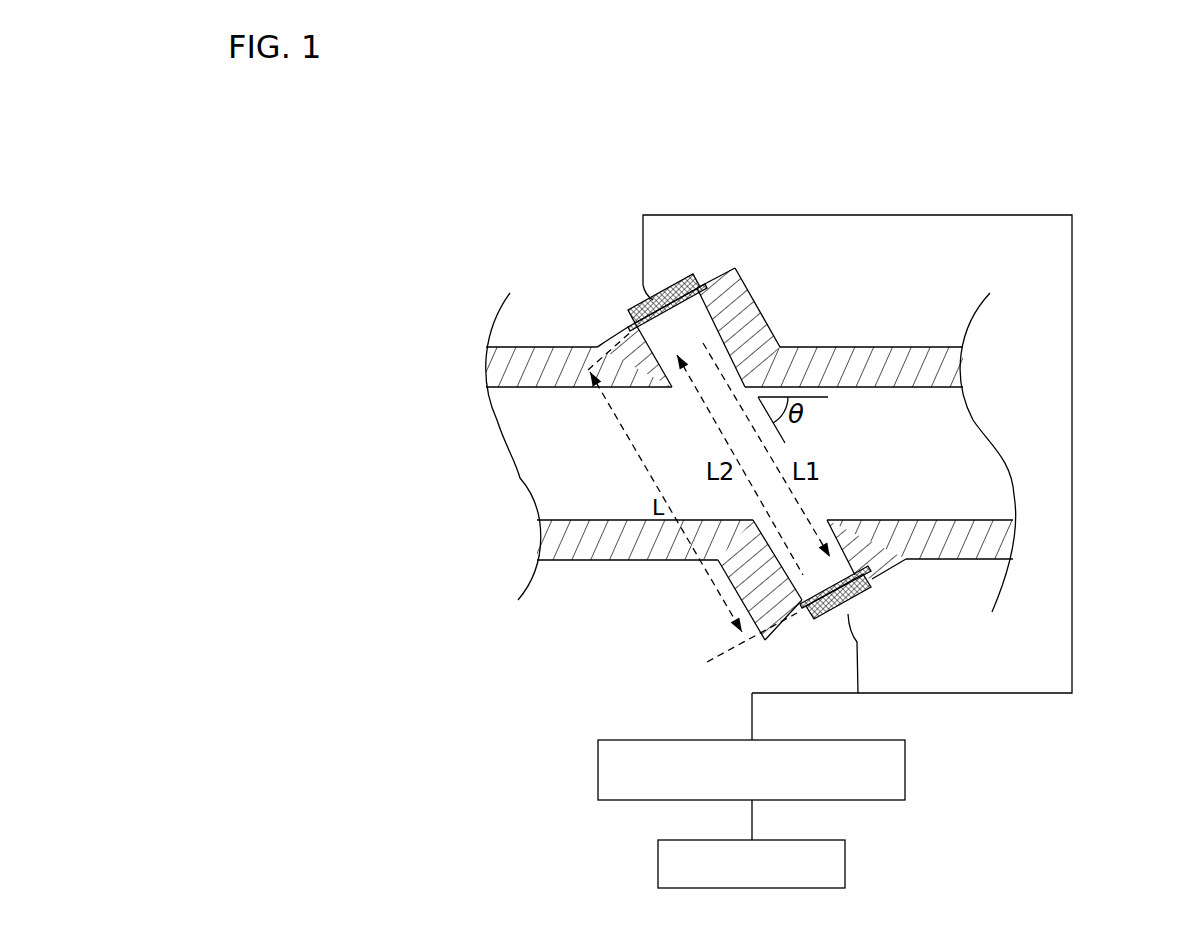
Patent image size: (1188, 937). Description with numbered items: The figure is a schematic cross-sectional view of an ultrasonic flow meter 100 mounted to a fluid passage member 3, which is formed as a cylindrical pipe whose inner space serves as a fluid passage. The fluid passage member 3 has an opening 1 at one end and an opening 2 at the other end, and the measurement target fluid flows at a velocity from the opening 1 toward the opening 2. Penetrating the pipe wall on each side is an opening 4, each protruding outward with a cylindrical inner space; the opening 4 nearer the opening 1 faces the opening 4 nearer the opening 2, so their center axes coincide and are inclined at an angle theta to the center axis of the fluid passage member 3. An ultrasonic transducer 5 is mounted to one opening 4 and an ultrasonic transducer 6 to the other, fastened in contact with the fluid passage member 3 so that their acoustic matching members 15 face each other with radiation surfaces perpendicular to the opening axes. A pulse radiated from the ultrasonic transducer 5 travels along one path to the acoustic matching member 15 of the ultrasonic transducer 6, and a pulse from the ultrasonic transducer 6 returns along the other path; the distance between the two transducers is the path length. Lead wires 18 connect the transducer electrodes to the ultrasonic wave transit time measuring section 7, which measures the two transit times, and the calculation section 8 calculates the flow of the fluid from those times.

The ultrasonic flow meter 100 is at (676, 187).
The opening 1 is at (540, 462).
The opening 2 is at (958, 460).
The fluid passage member 3 is at (863, 367).
The opening 4 is at (733, 380).
The ultrasonic transducer 5 is at (648, 300).
The ultrasonic transducer 6 is at (857, 610).
The ultrasonic wave transit time measuring section 7 is at (905, 773).
The calculation section 8 is at (845, 862).
The acoustic matching member 15 is at (632, 328).
The lead wire 18 is at (644, 231).